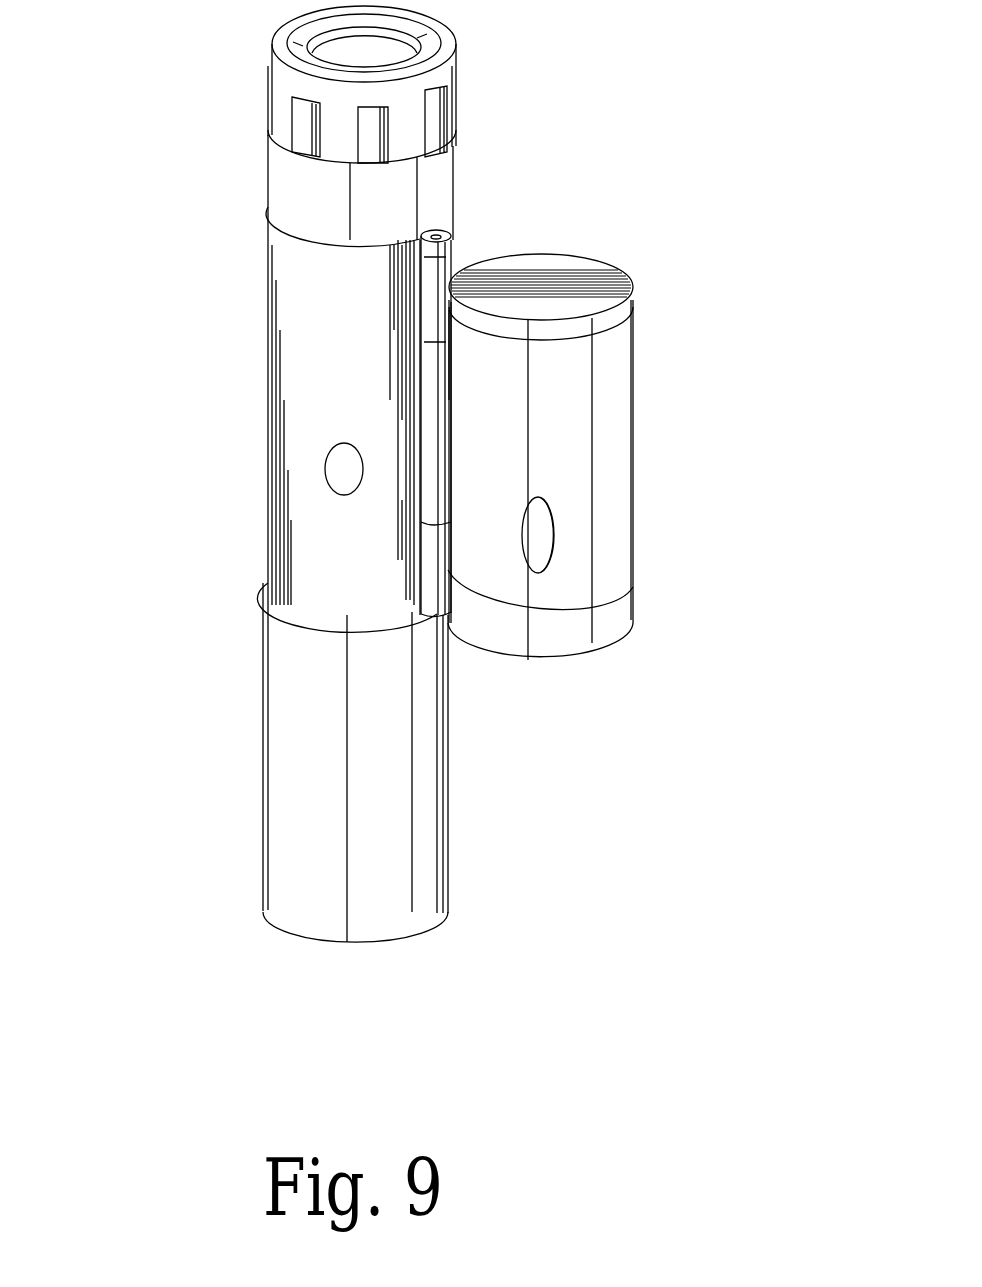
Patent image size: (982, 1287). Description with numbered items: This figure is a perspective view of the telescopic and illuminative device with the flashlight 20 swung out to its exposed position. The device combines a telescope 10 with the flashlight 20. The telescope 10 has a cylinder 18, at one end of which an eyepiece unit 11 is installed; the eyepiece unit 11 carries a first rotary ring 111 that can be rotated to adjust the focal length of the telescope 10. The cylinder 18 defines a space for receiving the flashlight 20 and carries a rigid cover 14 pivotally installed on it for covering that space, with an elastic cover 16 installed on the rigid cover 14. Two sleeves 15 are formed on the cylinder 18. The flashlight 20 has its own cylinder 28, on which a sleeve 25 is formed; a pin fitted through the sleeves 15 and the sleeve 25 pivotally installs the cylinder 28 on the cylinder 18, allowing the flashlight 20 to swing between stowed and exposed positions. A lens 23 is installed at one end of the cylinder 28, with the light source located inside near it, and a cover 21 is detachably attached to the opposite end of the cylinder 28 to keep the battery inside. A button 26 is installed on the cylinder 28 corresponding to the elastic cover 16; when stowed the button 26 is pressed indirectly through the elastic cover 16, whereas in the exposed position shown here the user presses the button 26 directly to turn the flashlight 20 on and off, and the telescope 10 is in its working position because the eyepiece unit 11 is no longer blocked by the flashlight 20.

The telescope 10 is at (445, 471).
The eyepiece unit 11 is at (471, 81).
The first rotary ring 111 is at (437, 106).
The rigid cover 14 is at (275, 383).
The sleeves 15 is at (435, 254).
The elastic cover 16 is at (340, 471).
The cylinder 18 is at (287, 810).
The flashlight 20 is at (635, 511).
The cover 21 is at (635, 283).
The lens 23 is at (540, 638).
The sleeve 25 is at (433, 388).
The button 26 is at (542, 543).
The cylinder 28 is at (568, 420).